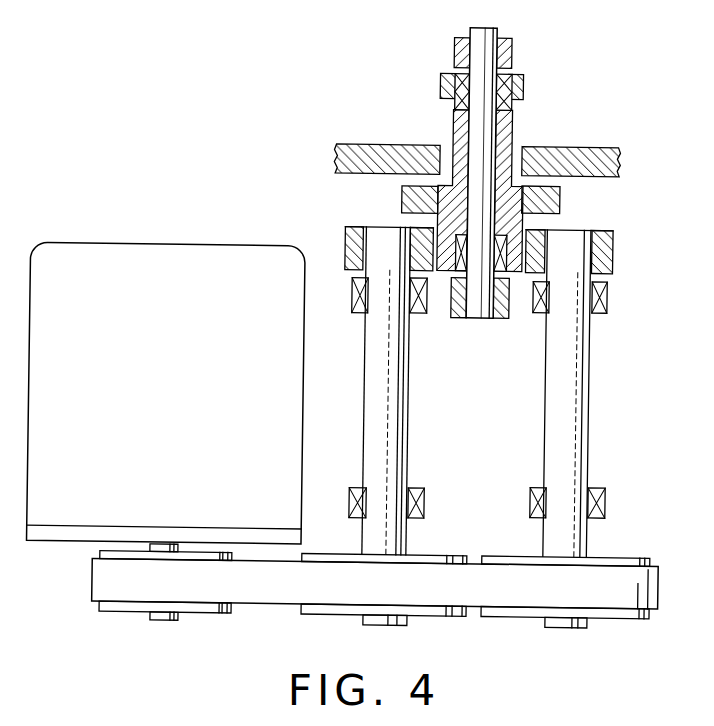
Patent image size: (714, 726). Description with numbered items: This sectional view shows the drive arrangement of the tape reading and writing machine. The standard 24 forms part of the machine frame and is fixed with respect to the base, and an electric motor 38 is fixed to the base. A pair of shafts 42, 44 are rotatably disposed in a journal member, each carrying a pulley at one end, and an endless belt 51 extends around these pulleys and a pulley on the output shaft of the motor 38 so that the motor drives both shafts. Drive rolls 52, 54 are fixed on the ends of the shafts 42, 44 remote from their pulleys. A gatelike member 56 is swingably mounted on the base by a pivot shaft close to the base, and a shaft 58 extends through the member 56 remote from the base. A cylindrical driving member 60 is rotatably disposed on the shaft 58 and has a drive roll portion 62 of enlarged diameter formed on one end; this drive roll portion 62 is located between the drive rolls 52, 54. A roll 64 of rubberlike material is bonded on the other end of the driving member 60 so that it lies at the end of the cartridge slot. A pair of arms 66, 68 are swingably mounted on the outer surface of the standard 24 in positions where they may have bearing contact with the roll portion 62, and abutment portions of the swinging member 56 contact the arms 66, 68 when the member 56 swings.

The standard 24 is at (364, 145).
The electric motor 38 is at (96, 247).
The shaft 42 is at (410, 432).
The shaft 44 is at (592, 437).
The endless belt 51 is at (94, 582).
The drive roll 52 is at (343, 234).
The drive roll 54 is at (611, 252).
The gatelike member 56 is at (507, 56).
The shaft 58 is at (464, 28).
The cylindrical driving member 60 is at (508, 131).
The drive roll portion 62 is at (511, 270).
The roll 64 is at (436, 86).
The arm 66 is at (399, 195).
The arm 68 is at (557, 197).